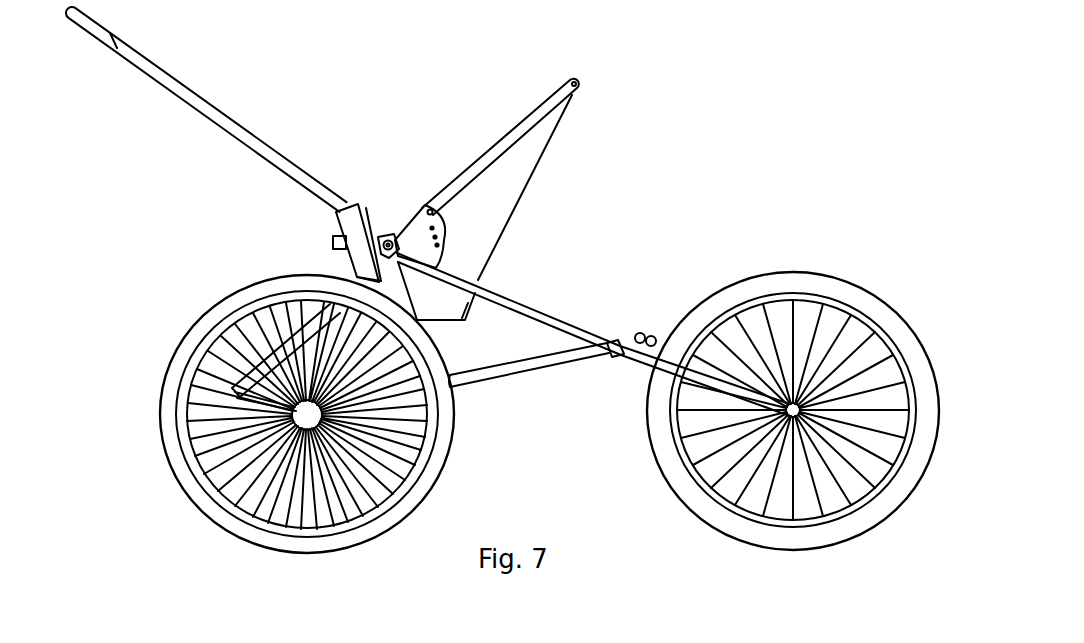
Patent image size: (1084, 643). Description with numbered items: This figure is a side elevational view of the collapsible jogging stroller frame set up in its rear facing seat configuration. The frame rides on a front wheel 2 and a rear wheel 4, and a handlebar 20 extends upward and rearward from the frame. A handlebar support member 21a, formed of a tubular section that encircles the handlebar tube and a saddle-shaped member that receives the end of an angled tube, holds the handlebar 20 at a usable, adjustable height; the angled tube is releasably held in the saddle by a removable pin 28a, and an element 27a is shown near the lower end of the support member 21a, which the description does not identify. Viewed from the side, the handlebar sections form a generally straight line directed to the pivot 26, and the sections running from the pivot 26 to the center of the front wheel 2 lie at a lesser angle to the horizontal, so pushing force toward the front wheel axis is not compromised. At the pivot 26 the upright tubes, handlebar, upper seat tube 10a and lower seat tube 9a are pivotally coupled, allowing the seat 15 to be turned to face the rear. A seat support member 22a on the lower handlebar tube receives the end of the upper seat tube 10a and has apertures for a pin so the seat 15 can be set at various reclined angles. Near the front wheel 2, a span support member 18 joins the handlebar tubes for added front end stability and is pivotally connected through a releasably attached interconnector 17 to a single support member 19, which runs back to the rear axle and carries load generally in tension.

The front wheel 2 is at (922, 372).
The wheel 4 is at (167, 395).
The lower seat tube 9a is at (267, 303).
The upper seat tube 10a is at (482, 157).
The seat 15 is at (500, 218).
The interconnector 17 is at (612, 352).
The span support member 18 is at (653, 330).
The single support member 19 is at (518, 367).
The handlebar 20 is at (92, 31).
The handlebar support member 21a is at (357, 275).
The seat support member 22a is at (418, 247).
The pivot 26 is at (388, 240).
The bracket lower mount 27a is at (357, 277).
The removable pin 28a is at (435, 215).